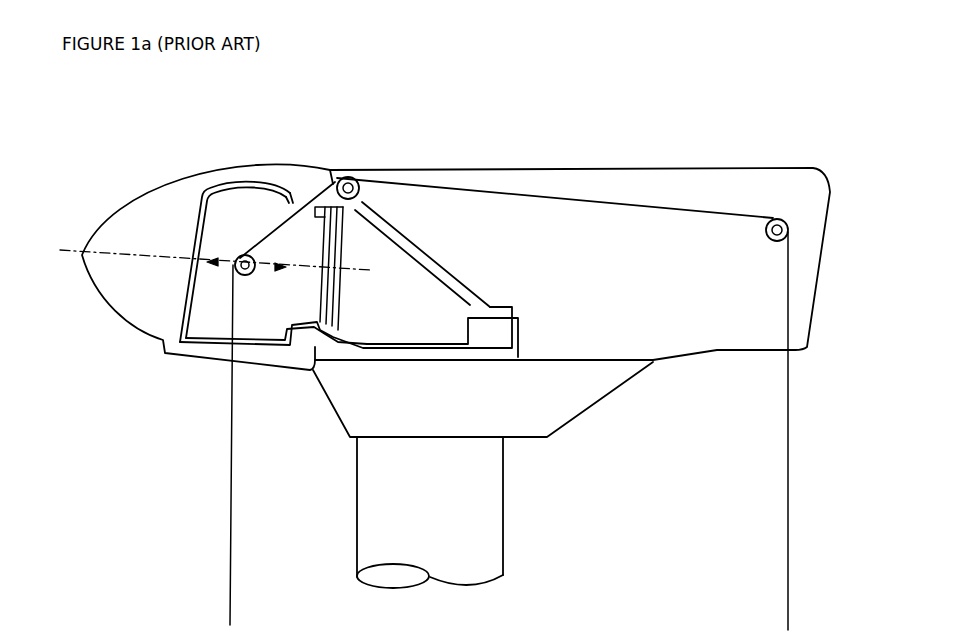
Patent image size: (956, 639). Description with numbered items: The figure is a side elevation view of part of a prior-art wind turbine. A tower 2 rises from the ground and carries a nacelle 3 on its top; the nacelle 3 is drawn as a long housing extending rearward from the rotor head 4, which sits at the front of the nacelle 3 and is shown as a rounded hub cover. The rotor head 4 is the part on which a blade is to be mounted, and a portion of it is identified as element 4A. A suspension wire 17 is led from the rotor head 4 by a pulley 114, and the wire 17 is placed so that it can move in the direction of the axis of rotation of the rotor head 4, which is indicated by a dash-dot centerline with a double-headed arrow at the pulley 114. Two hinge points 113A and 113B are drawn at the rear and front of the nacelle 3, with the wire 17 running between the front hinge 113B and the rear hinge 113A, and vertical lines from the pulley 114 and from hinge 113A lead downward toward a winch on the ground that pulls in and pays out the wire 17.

The tower 2 is at (505, 517).
The nacelle 3 is at (598, 168).
The rotor head 4 is at (196, 217).
The hub rear portion 4A is at (303, 193).
The suspension wire 17 is at (620, 206).
The rear hinge 113A is at (778, 218).
The front hinge 113B is at (353, 170).
The pulley 114 is at (250, 276).